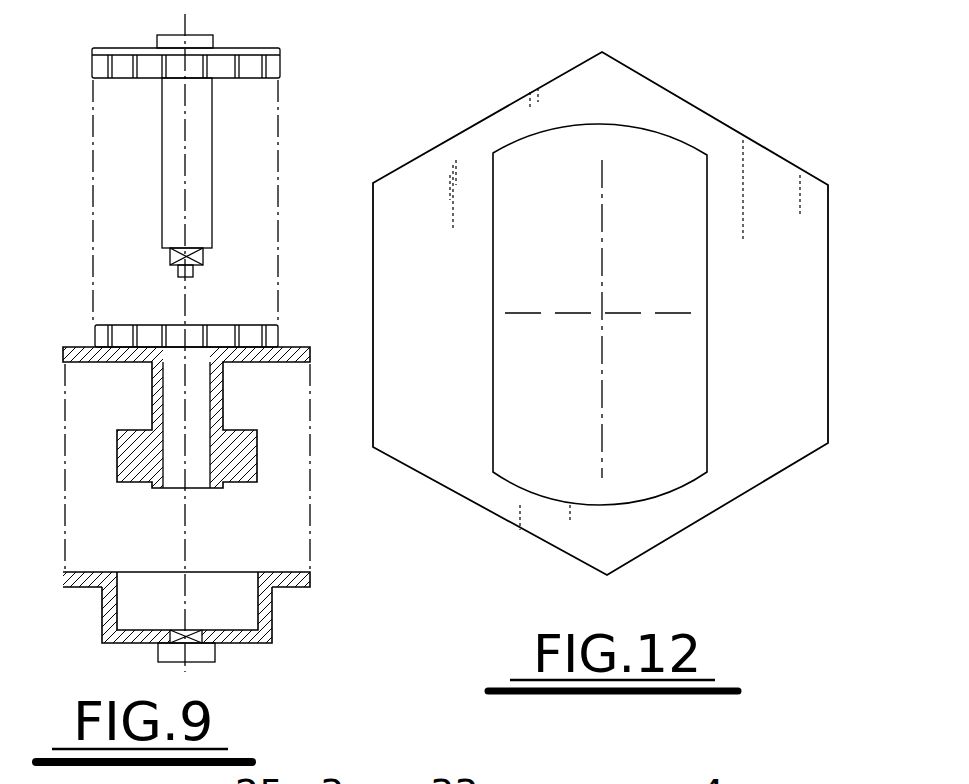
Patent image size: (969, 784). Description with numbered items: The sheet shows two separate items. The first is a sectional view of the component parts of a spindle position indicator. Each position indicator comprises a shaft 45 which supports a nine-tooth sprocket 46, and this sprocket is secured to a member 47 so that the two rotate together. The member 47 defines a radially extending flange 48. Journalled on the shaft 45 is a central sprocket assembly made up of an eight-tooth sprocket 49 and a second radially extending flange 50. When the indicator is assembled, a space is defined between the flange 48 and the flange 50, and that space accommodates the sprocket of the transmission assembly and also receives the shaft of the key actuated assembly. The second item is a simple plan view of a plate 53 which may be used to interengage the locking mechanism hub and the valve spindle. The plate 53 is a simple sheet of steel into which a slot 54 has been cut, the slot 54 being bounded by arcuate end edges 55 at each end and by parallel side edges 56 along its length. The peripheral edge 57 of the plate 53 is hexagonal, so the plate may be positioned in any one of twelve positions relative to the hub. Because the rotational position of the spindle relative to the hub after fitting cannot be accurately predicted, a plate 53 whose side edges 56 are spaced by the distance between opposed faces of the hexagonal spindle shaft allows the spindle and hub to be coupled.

In FIG. 9, the shaft 45 is at (175, 167).
In FIG. 9, the nine-tooth sprocket 46 is at (280, 63).
In FIG. 9, the member 47 is at (102, 620).
In FIG. 9, the radially extending flange 48 is at (307, 568).
In FIG. 9, the eight-tooth sprocket 49 is at (277, 317).
In FIG. 9, the radially extending flange 50 is at (83, 352).
In FIG. 12, the plate 53 is at (420, 210).
In FIG. 12, the slot 54 is at (513, 162).
In FIG. 12, the arcuate end edges 55 is at (540, 130).
In FIG. 12, the parallel side edges 56 is at (494, 423).
In FIG. 12, the peripheral edge 57 is at (828, 440).